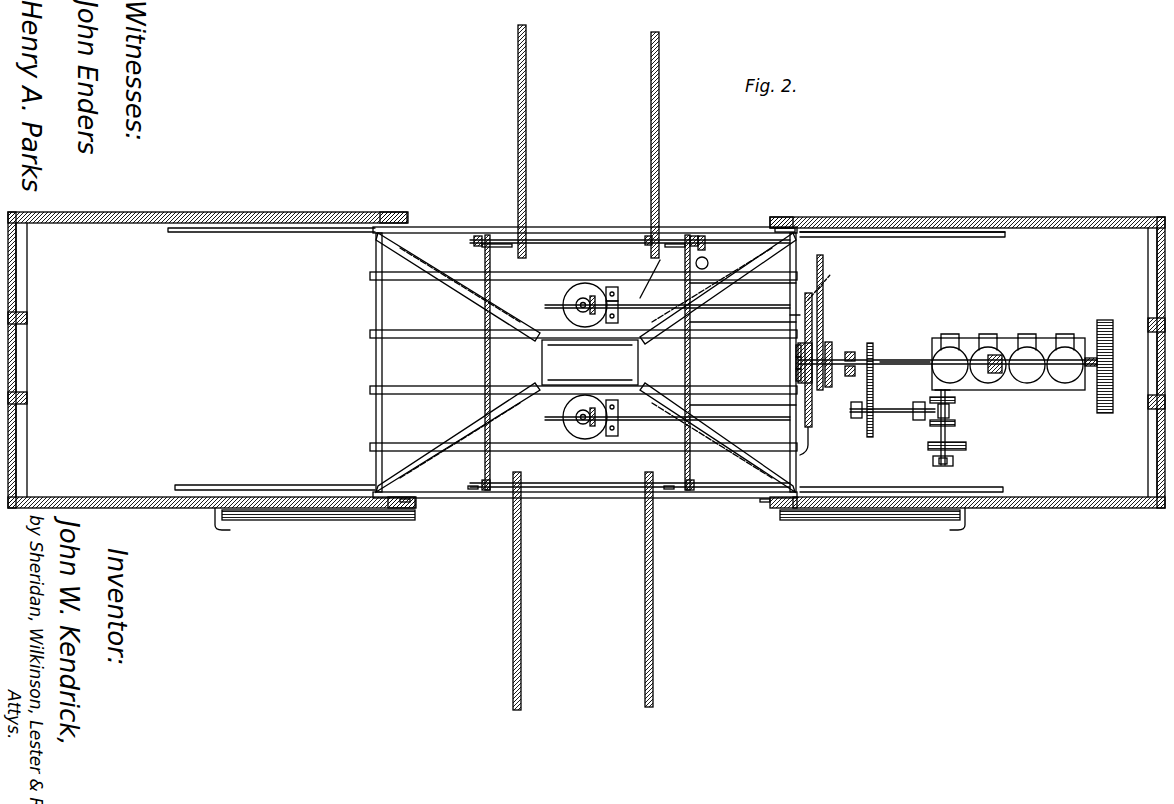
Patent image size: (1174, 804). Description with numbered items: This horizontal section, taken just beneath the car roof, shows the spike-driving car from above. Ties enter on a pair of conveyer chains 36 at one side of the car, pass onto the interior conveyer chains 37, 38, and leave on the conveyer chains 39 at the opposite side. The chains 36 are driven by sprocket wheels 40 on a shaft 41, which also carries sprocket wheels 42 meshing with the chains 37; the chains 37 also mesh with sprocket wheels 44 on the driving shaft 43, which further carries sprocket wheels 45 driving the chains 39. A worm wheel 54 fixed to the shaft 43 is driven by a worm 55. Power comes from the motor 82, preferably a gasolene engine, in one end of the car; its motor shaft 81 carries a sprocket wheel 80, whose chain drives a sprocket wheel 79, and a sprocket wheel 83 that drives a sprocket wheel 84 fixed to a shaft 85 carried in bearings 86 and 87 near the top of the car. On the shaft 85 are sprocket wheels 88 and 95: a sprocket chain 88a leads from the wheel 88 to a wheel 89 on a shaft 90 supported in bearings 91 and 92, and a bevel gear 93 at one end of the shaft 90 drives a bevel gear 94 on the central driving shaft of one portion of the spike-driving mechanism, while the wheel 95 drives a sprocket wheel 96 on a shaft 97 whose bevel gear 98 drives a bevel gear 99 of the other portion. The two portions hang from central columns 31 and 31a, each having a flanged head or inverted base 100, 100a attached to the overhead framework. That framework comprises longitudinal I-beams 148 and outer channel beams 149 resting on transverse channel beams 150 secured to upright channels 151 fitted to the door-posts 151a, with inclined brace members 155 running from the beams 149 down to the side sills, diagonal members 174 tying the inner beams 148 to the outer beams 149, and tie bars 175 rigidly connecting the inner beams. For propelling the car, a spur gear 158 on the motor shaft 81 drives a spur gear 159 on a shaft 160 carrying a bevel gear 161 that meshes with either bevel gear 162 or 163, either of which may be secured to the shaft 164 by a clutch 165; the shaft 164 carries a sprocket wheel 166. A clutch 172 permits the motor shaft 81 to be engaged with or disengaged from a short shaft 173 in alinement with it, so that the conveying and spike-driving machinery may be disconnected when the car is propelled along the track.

The central column 31 is at (582, 425).
The central column 31a is at (583, 298).
The conveyer chains 36 is at (512, 609).
The conveyer chain 37 is at (690, 465).
The conveyer chain 38 is at (484, 462).
The conveyer chains 39 is at (516, 133).
The sprocket wheels 40 is at (500, 498).
The shaft 41 is at (600, 490).
The sprocket wheels 42 is at (470, 503).
The driving shaft 43 is at (575, 238).
The sprocket wheels 44 is at (470, 236).
The sprocket wheels 45 is at (498, 242).
The worm wheel 54 is at (706, 240).
The worm 55 is at (688, 283).
The sprocket wheel 79 is at (828, 258).
The sprocket wheel 80 is at (813, 420).
The motor shaft 81 is at (908, 358).
The motor 82 is at (1010, 345).
The sprocket wheel 83 is at (830, 312).
The sprocket wheel 84 is at (830, 342).
The shaft 85 is at (888, 360).
The bearing 86 is at (1000, 355).
The bearing 87 is at (795, 363).
The sprocket wheel 88 is at (796, 375).
The sprocket chain 88a is at (812, 345).
The sprocket wheel 89 is at (794, 292).
The shaft 90 is at (695, 326).
The bearing 91 is at (792, 315).
The bearing 92 is at (618, 319).
The bevel gear 93 is at (612, 290).
The bevel gear 94 is at (560, 305).
The sprocket wheel 95 is at (795, 351).
The sprocket wheel 96 is at (814, 446).
The shaft 97 is at (740, 420).
The bevel gear 98 is at (612, 437).
The bevel gear 99 is at (562, 417).
The flanged head 100 is at (555, 490).
The flanged head 100a is at (548, 236).
The longitudinal I-beams 148 is at (392, 447).
The outer channel beams 149 is at (415, 225).
The transverse channel beams 150 is at (372, 267).
The upright channels 151 is at (776, 217).
The door-posts 151a is at (770, 216).
The inclined brace members 155 is at (898, 230).
The spur gear 158 is at (878, 338).
The spur gear 159 is at (860, 420).
The shaft 160 is at (938, 402).
The bevel gear 161 is at (918, 421).
The bevel gear 162 is at (956, 402).
The bevel gear 163 is at (955, 425).
The shaft 164 is at (940, 455).
The clutch 165 is at (950, 412).
The sprocket wheel 166 is at (955, 452).
The collar 172 is at (852, 352).
The short shaft 173 is at (852, 376).
The diagonal members 174 is at (775, 500).
The tie bars 175 is at (636, 359).